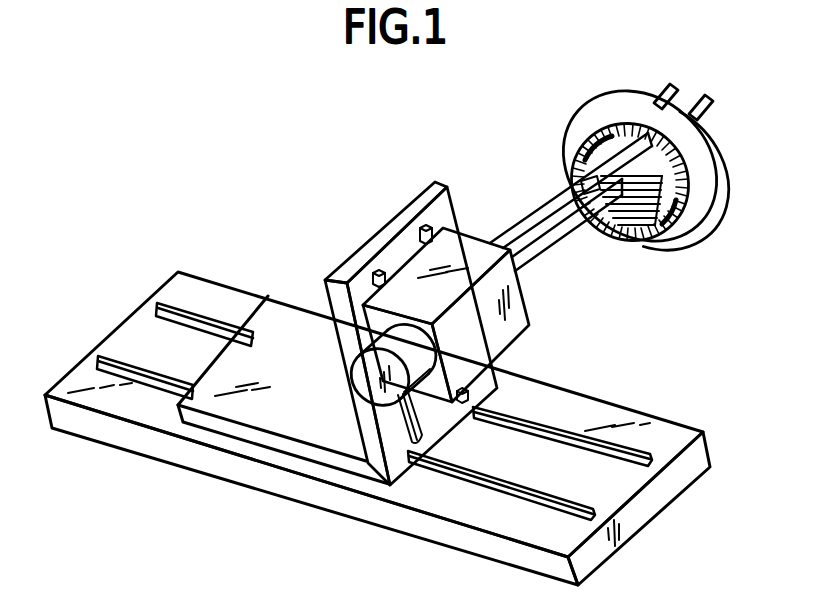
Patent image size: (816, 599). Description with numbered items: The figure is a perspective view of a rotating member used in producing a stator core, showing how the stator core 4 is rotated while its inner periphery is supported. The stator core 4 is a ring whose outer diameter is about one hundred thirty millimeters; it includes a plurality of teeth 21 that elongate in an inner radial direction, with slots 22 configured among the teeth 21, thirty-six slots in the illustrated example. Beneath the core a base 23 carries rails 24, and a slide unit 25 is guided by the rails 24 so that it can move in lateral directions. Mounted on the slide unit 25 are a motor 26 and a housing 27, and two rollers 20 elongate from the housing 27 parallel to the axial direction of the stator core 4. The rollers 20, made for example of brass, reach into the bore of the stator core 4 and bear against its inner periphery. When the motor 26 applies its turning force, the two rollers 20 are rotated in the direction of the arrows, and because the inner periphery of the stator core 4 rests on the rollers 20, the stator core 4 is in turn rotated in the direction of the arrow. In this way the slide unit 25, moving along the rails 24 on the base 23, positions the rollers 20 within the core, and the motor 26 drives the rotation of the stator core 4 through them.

The stator core 4 is at (707, 133).
The rollers 20 is at (575, 218).
The teeth 21 is at (683, 180).
The slots 22 is at (690, 200).
The base 23 is at (622, 490).
The rails 24 is at (622, 448).
The slide unit 25 is at (385, 233).
The motor 26 is at (382, 378).
The housing 27 is at (503, 317).